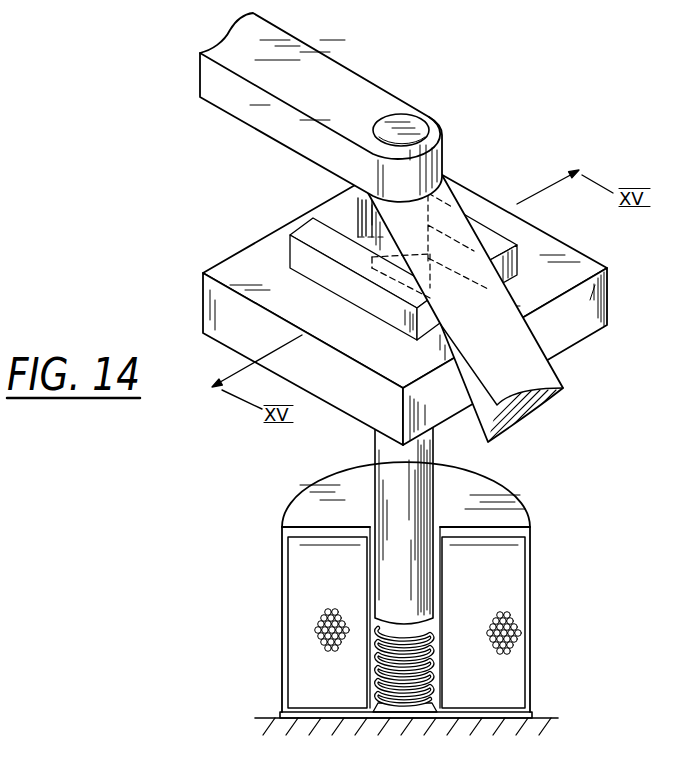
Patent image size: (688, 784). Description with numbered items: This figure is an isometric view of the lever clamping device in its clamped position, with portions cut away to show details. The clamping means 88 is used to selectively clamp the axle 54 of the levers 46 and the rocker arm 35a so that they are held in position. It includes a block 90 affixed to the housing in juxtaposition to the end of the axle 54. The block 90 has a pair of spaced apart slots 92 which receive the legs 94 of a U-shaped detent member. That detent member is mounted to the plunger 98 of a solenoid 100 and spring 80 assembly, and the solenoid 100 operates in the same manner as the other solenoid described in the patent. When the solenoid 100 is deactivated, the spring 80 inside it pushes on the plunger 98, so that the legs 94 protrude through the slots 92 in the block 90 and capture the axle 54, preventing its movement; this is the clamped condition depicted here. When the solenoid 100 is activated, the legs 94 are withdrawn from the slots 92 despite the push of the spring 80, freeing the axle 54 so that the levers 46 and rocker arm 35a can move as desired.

The rocker arm 35a is at (349, 80).
The axle 54 is at (408, 133).
The clamping means 88 is at (133, 251).
The slots 92 is at (320, 270).
The legs 94 is at (308, 232).
The block 90 is at (570, 332).
The levers 46 is at (551, 378).
The plunger 98 is at (376, 458).
The solenoid 100 is at (282, 592).
The spring 80 is at (423, 647).